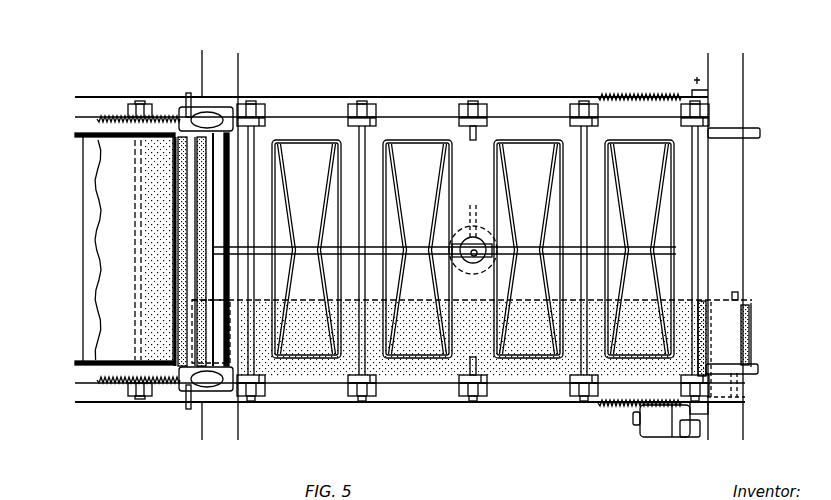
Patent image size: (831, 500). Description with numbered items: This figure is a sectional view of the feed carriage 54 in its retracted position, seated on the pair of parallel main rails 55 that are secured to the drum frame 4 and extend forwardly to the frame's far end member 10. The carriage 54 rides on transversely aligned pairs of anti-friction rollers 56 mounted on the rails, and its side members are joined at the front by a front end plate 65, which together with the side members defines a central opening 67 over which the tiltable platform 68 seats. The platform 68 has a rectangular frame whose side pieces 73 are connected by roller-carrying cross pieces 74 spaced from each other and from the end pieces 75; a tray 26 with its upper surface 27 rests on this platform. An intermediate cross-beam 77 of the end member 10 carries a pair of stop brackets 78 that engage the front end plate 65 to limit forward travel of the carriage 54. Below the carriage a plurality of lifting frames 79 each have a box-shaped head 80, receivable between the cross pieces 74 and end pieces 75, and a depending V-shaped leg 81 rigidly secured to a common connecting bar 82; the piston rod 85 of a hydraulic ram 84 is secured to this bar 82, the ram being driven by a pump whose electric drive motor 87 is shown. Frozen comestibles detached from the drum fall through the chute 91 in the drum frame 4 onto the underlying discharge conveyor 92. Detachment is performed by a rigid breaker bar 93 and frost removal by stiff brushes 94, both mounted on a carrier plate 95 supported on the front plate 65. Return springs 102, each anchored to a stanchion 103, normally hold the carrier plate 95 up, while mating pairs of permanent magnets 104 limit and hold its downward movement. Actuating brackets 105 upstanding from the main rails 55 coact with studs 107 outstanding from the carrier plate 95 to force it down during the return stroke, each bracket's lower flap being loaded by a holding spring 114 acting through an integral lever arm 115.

The drum frame 4 is at (752, 211).
The front end member 10 is at (238, 55).
The tray 26 is at (96, 309).
The upper surface 27 is at (112, 325).
The carriage 54 is at (91, 108).
The main rails 55 is at (512, 97).
The anti-friction rollers 56 is at (265, 123).
The front end plate 65 is at (207, 249).
The central opening 67 is at (78, 136).
The tiltable platform 68 is at (92, 191).
The side pieces 73 is at (83, 362).
The cross pieces 74 is at (90, 250).
The end pieces 75 is at (172, 245).
The cross-beam 77 is at (744, 70).
The stop brackets 78 is at (762, 134).
The lifting frames 79 is at (472, 264).
The head 80 is at (473, 240).
The V-shaped leg 81 is at (322, 207).
The connecting bar 82 is at (526, 256).
The hydraulic ram 84 is at (473, 256).
The piston rod 85 is at (472, 249).
The electric drive motor 87 is at (661, 438).
The chute 91 is at (480, 164).
The discharge conveyor 92 is at (481, 342).
The breaker bar 93 is at (239, 206).
The brushes 94 is at (200, 198).
The carrier plate 95 is at (228, 253).
The return springs 102 is at (162, 117).
The stanchion 103 is at (100, 117).
The permanent magnets 104 is at (206, 112).
The actuating brackets 105 is at (697, 249).
The stud 107 is at (190, 93).
The holding spring 114 is at (645, 95).
The lever arm 115 is at (692, 95).